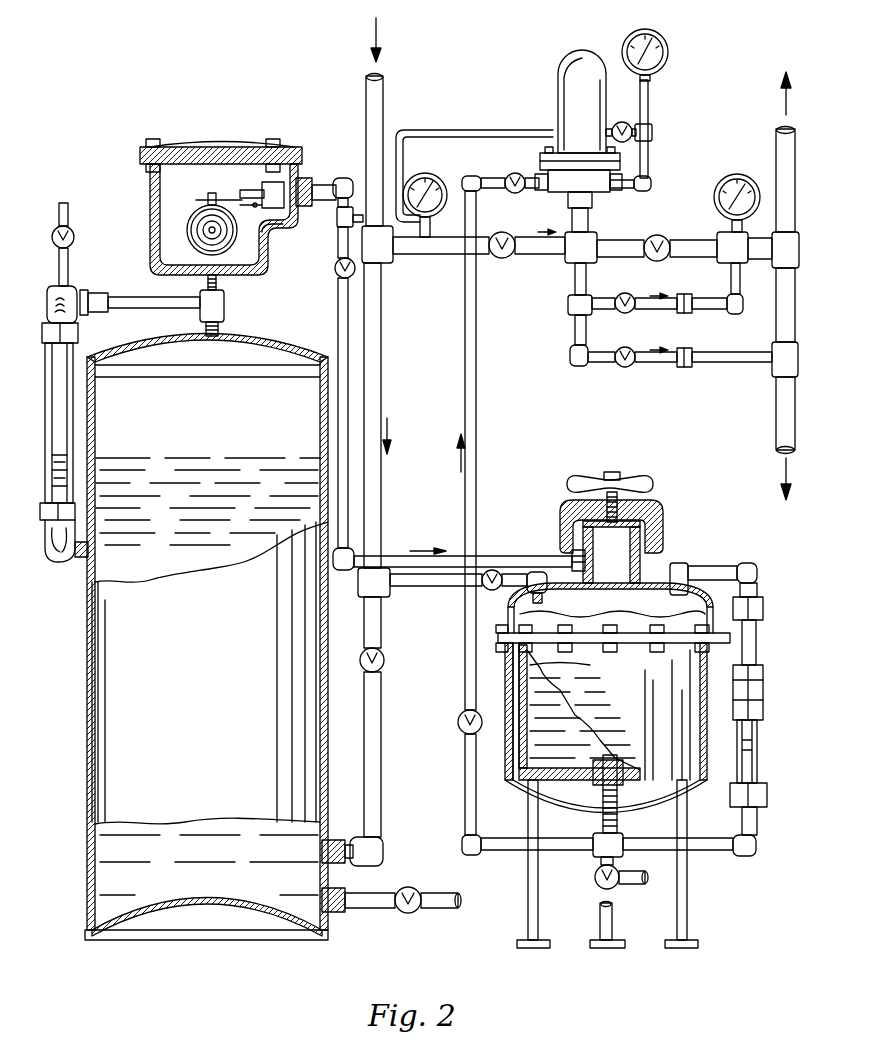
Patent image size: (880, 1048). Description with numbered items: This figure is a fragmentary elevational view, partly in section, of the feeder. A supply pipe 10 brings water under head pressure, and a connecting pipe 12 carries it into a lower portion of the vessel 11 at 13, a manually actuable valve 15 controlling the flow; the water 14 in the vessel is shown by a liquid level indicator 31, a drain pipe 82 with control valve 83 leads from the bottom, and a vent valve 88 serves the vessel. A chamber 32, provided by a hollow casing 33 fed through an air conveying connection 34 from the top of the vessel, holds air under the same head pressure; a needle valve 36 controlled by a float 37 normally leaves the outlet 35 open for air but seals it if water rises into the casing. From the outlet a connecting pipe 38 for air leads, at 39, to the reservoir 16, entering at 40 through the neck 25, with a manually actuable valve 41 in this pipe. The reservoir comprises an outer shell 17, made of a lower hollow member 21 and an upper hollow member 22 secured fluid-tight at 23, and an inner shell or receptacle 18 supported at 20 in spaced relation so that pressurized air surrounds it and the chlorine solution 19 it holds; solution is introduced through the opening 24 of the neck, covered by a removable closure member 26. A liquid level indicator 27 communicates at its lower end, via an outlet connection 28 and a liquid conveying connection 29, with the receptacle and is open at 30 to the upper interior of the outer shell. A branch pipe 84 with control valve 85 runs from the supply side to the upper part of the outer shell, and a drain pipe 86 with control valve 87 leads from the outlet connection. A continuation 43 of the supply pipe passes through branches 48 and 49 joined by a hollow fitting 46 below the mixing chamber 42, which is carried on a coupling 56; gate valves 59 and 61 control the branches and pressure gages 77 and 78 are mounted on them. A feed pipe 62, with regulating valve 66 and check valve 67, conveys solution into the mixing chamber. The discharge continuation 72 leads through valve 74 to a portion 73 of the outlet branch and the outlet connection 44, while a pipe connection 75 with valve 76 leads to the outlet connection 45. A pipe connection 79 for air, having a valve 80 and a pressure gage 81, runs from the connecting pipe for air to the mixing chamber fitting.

The supply pipe 10 is at (386, 101).
The vessel 11 is at (100, 700).
The connecting pipe 12 is at (381, 492).
The entry point 13 is at (332, 838).
The liquid 14 is at (82, 562).
The manually actuable valve 15 is at (384, 660).
The reservoir 16 is at (688, 764).
The outer shell 17 is at (522, 784).
The inner shell 18 is at (516, 742).
The liquid 19 is at (528, 700).
The support 20 is at (514, 660).
The lower hollow member 21 is at (566, 802).
The upper hollow member 22 is at (676, 586).
The fluid-tight joint 23 is at (596, 644).
The opening 24 is at (642, 544).
The neck 25 is at (656, 578).
The removable closure member 26 is at (648, 512).
The liquid level indicator 27 is at (758, 698).
The outlet connection 28 is at (604, 760).
The gauge glass lower connection 29 is at (738, 850).
The upper opening 30 is at (690, 606).
The liquid level indicator 31 is at (46, 420).
The chamber 32 is at (158, 212).
The hollow casing 33 is at (268, 240).
The air conveying connection 34 is at (222, 296).
The valve controlled outlet 35 is at (302, 178).
The needle valve 36 is at (268, 182).
The float 37 is at (196, 240).
The connecting pipe for air 38 is at (338, 302).
The connection point 39 is at (326, 190).
The entry point 40 is at (572, 557).
The manually actuable valve 41 is at (335, 270).
The mixing chamber 42 is at (558, 90).
The continuation of supply pipe 43 is at (618, 244).
The liquid outlet connection 44 is at (776, 150).
The liquid outlet connection 45 is at (774, 418).
The hollow fitting 46 is at (566, 254).
The branch or section 48 is at (440, 255).
The branch or section 49 is at (686, 242).
The coupling 56 is at (588, 220).
The manually actuable valve 59 is at (500, 258).
The manually actuable valve 61 is at (658, 236).
The feed pipe 62 is at (478, 414).
The manually actuable valve 66 is at (514, 174).
The check valve 67 is at (458, 722).
The continuation of discharge pipe 72 is at (574, 290).
The portion of branch 73 is at (726, 300).
The manually actuable valve 74 is at (624, 293).
The pipe connection 75 is at (570, 348).
The manually actuable valve 76 is at (622, 366).
The pressure gage 77 is at (436, 176).
The pressure gage 78 is at (716, 182).
The pipe connection for air 79 is at (470, 130).
The manually actuable valve 80 is at (614, 122).
The pressure gage 81 is at (668, 42).
The drain pipe 82 is at (372, 908).
The control valve 83 is at (410, 913).
The branch pipe 84 is at (426, 586).
The control valve 85 is at (492, 590).
The drain pipe 86 is at (632, 884).
The control valve 87 is at (598, 884).
The vent valve 88 is at (52, 237).